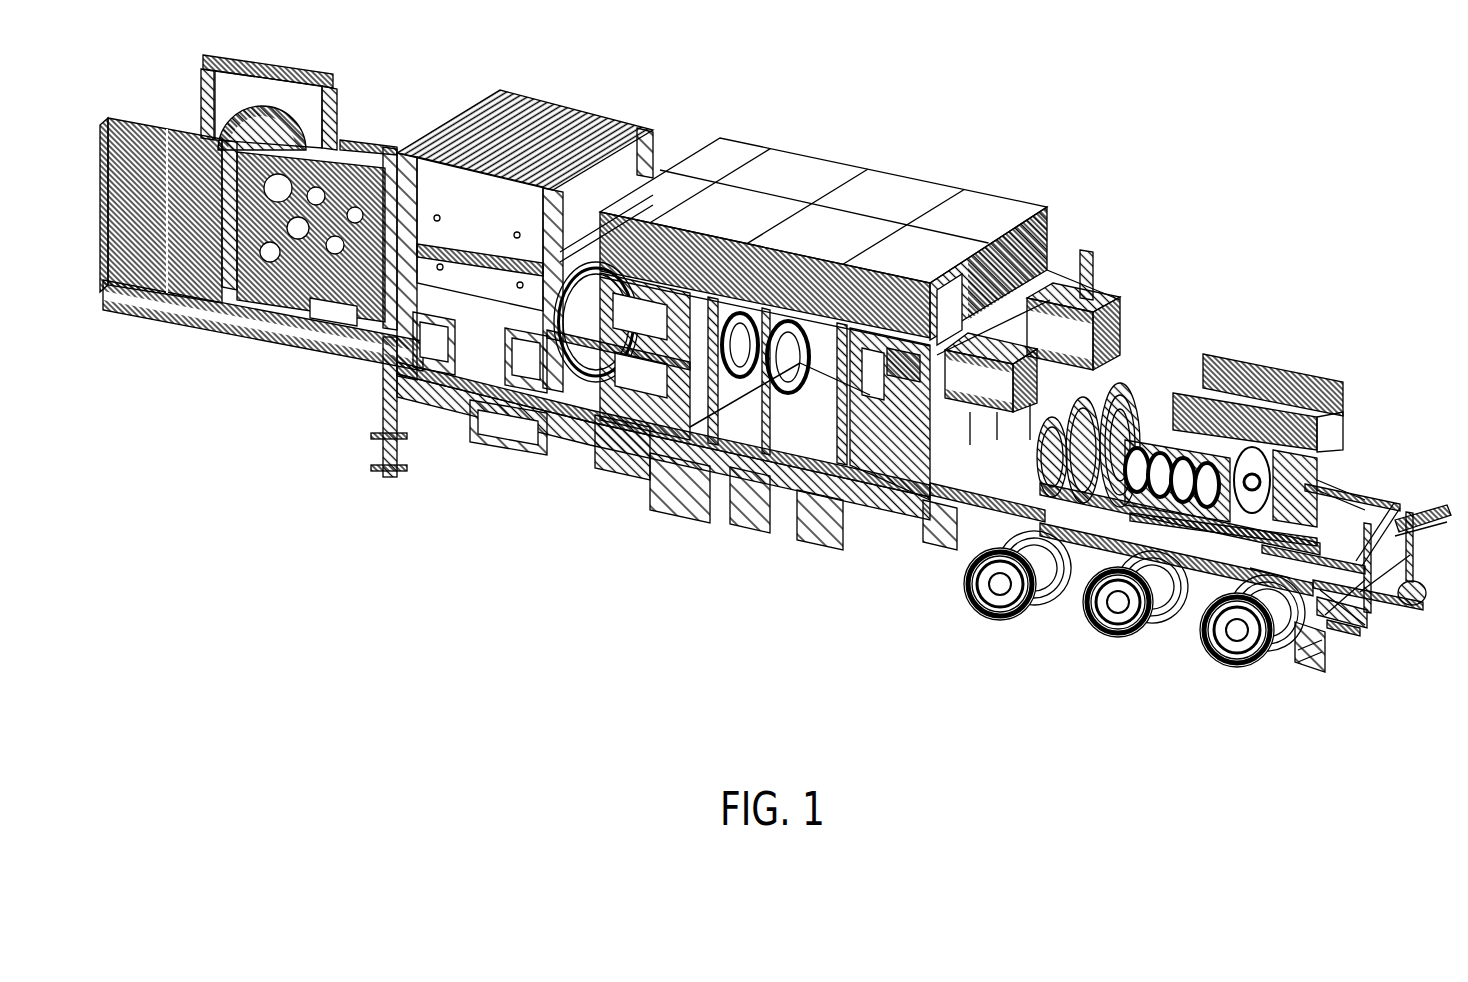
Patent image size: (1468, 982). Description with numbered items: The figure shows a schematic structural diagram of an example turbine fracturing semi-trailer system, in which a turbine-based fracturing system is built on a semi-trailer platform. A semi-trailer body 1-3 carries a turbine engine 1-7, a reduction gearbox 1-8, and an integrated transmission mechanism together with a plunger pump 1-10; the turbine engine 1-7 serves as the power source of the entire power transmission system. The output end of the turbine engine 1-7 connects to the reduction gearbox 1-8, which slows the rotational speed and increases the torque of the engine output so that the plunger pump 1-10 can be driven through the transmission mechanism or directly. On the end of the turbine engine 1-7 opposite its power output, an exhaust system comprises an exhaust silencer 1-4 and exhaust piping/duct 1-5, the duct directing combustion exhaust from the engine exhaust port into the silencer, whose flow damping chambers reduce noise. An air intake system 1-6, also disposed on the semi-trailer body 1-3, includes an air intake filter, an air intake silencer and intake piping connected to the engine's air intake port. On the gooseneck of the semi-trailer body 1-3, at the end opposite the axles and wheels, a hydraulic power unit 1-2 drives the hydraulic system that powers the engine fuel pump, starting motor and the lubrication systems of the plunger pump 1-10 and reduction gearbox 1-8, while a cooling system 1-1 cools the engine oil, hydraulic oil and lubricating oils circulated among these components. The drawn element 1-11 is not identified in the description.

The cooling system 1-1 is at (146, 233).
The hydraulic power unit 1-2 is at (290, 234).
The semi-trailer body 1-3 is at (357, 348).
The exhaust silencer 1-4 is at (482, 283).
The exhaust piping/duct 1-5 is at (573, 341).
The air intake system 1-6 is at (690, 256).
The turbine engine 1-7 is at (800, 360).
The reduction gearbox 1-8 is at (898, 372).
The plunger pump 1-10 is at (1035, 403).
The plunger pump 1-11 is at (1132, 462).